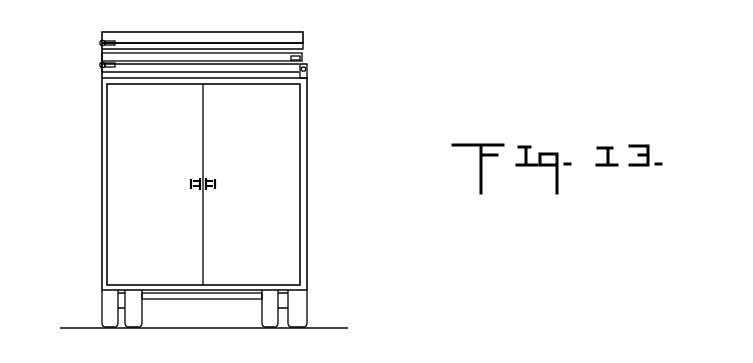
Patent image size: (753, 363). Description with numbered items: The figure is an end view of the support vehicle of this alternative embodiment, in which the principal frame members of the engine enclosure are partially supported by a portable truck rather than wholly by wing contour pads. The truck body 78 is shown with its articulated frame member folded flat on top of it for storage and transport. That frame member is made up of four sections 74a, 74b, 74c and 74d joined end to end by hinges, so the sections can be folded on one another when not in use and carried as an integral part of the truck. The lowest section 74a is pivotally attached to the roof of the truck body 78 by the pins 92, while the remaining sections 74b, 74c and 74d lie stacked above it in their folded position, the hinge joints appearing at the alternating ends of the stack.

The frame member section 74a is at (285, 72).
The frame member section 74b is at (304, 60).
The frame member section 74c is at (102, 51).
The frame member section 74d is at (173, 37).
The pins 92 is at (308, 68).
The truck body 78 is at (288, 172).